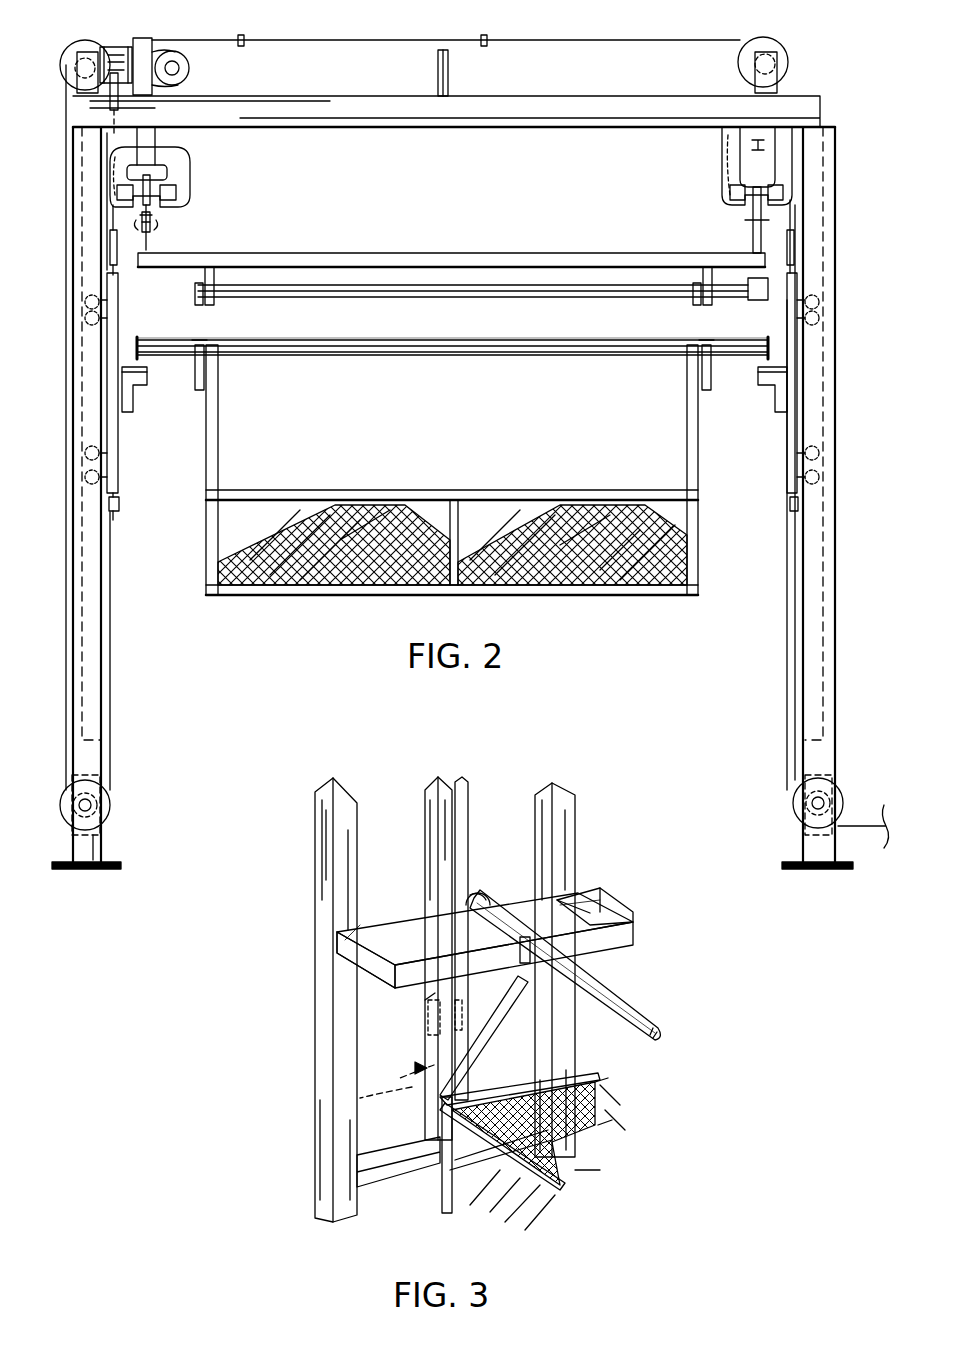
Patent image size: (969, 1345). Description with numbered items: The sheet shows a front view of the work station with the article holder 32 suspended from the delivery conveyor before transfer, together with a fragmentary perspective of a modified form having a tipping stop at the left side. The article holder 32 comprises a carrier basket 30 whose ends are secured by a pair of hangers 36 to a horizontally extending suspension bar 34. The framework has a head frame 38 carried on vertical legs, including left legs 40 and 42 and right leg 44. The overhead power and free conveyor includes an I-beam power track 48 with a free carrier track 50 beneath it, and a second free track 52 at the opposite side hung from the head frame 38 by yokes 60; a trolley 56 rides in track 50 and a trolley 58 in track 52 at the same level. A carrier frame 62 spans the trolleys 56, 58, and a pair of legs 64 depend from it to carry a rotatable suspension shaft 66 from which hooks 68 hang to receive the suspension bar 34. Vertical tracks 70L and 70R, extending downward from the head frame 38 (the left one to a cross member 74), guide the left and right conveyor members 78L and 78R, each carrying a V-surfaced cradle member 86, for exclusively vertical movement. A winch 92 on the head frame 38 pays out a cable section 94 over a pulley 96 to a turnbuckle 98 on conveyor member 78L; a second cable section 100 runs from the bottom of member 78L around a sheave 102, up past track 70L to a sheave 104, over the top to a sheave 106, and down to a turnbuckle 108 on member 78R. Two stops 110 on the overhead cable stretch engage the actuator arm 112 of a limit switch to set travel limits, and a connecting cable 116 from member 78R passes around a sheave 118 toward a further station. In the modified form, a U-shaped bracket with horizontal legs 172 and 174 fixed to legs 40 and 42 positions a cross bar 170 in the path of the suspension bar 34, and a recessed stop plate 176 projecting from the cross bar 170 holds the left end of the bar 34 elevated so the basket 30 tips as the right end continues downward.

In FIG. 2, the carrier basket 30 is at (540, 597).
In FIG. 3, the carrier basket 30 is at (487, 1095).
In FIG. 2, the article holder 32 is at (528, 338).
In FIG. 3, the article holder 32 is at (640, 1085).
In FIG. 2, the suspension bar 34 is at (455, 358).
In FIG. 3, the suspension bar 34 is at (617, 997).
In FIG. 2, the hangers 36 is at (218, 420).
In FIG. 3, the hangers 36 is at (500, 1013).
In FIG. 2, the head frame 38 is at (812, 95).
In FIG. 2, the left vertical leg 40 is at (73, 645).
In FIG. 3, the left vertical leg 40 is at (318, 848).
In FIG. 3, the left vertical leg 42 is at (578, 842).
In FIG. 2, the right vertical leg 44 is at (836, 645).
In FIG. 2, the I-beam power track 48 is at (760, 142).
In FIG. 2, the free carrier track 50 is at (742, 190).
In FIG. 2, the second free track 52 is at (180, 192).
In FIG. 2, the trolley 56 is at (750, 202).
In FIG. 2, the trolley 58 is at (152, 207).
In FIG. 2, the yokes 60 is at (182, 160).
In FIG. 2, the carrier frame 62 is at (555, 253).
In FIG. 2, the legs 64 is at (200, 272).
In FIG. 2, the suspension shaft 66 is at (355, 297).
In FIG. 2, the hooks 68 is at (200, 340).
In FIG. 2, the left vertical track 70L is at (100, 565).
In FIG. 3, the left vertical track 70L is at (448, 780).
In FIG. 2, the right vertical track 70R is at (856, 548).
In FIG. 3, the cross member 74 is at (410, 1140).
In FIG. 2, the left conveyor member 78L is at (122, 478).
In FIG. 3, the left conveyor member 78L is at (360, 1098).
In FIG. 2, the right conveyor member 78R is at (727, 425).
In FIG. 2, the cradle member 86 is at (147, 385).
In FIG. 3, the cradle member 86 is at (425, 1032).
In FIG. 2, the winch 92 is at (148, 38).
In FIG. 2, the cable section 94 is at (112, 133).
In FIG. 2, the pulley 96 is at (115, 70).
In FIG. 2, the turnbuckle 98 is at (110, 252).
In FIG. 2, the second cable section 100 is at (605, 40).
In FIG. 2, the sheave 102 is at (70, 815).
In FIG. 2, the sheave 104 is at (73, 58).
In FIG. 2, the sheave 106 is at (806, 26).
In FIG. 2, the turnbuckle 108 is at (795, 255).
In FIG. 2, the stops 110 is at (243, 35).
In FIG. 2, the actuator arm 112 is at (445, 50).
In FIG. 2, the connecting cable 116 is at (795, 745).
In FIG. 2, the sheave 118 is at (800, 820).
In FIG. 3, the cross bar 170 is at (620, 937).
In FIG. 3, the horizontal leg 172 is at (340, 950).
In FIG. 3, the horizontal leg 174 is at (598, 898).
In FIG. 3, the stop plate 176 is at (505, 900).